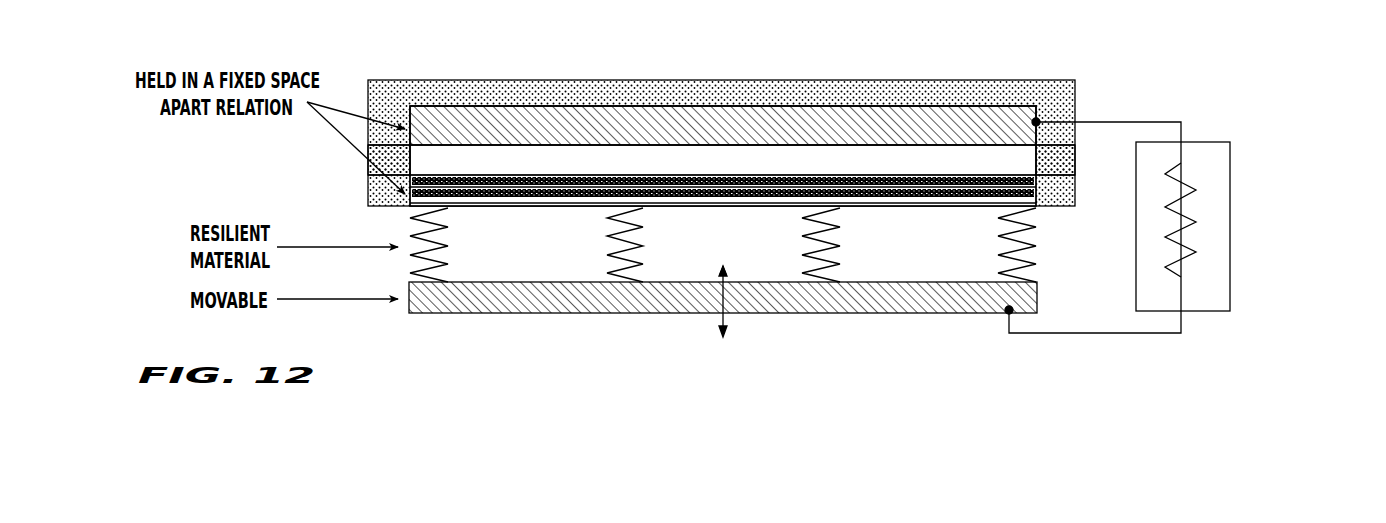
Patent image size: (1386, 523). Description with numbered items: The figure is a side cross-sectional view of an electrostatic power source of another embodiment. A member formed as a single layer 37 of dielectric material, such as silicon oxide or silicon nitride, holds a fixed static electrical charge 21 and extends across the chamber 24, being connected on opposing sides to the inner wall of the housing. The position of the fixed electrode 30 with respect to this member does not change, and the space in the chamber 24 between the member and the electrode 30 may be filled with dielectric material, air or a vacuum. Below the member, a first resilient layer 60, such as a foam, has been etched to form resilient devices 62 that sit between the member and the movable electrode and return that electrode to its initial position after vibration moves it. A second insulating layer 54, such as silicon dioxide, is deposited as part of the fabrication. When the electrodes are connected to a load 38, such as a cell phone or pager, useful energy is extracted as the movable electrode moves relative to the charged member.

The static electrical charge 21 is at (603, 185).
The resilient devices 62 is at (763, 88).
The first resilient layer 60 is at (843, 128).
The chamber 24 is at (918, 150).
The electrode 30 is at (990, 125).
The second insulating layer 54 is at (376, 171).
The single layer 37 is at (757, 183).
The load 38 is at (1215, 222).